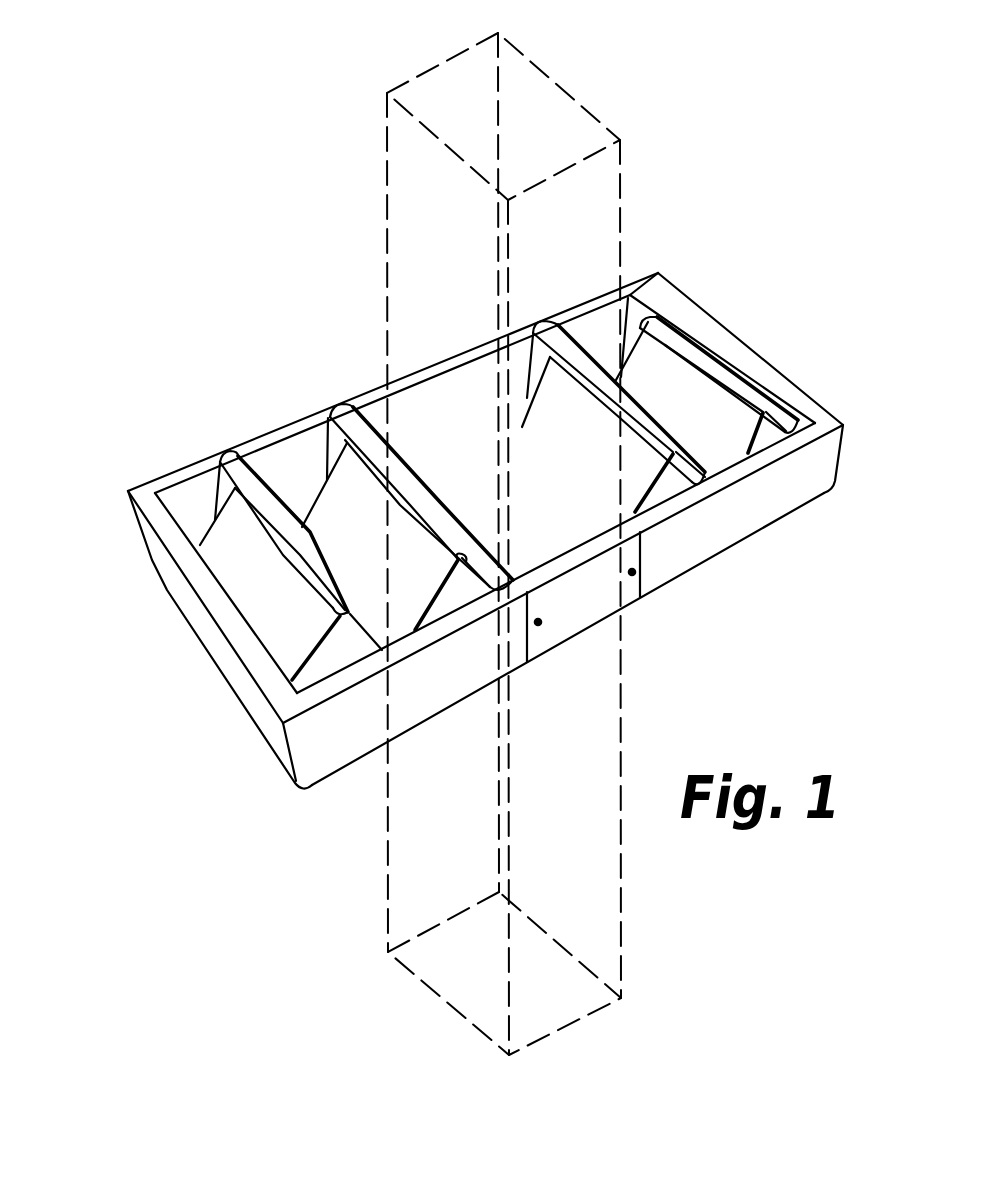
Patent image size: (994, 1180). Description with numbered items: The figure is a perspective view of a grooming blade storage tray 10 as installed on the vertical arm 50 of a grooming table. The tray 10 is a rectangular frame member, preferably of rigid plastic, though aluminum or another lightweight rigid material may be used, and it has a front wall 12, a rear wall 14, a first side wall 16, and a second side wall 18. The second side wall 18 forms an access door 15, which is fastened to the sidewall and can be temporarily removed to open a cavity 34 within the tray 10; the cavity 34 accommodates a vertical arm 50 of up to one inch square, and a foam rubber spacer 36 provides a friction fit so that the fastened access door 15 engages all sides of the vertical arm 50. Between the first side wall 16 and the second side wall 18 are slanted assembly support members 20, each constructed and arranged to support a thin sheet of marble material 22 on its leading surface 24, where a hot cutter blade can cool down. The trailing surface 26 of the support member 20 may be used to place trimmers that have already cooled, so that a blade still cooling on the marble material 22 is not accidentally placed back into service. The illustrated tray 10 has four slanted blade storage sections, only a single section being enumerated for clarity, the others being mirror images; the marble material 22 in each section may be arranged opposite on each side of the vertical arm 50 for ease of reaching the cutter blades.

The grooming blade storage tray 10 is at (477, 606).
The front wall 12 is at (521, 524).
The rear wall 14 is at (812, 402).
The access door 15 is at (669, 613).
The first side wall 16 is at (262, 433).
The second side wall 18 is at (805, 488).
The slanted assembly support member 20 is at (318, 655).
The marble material 22 is at (233, 478).
The leading surface 24 is at (360, 637).
The trailing surface 26 is at (228, 552).
The cavity 34 is at (636, 524).
The foam rubber spacer 36 is at (372, 416).
The vertical arm 50 is at (619, 140).